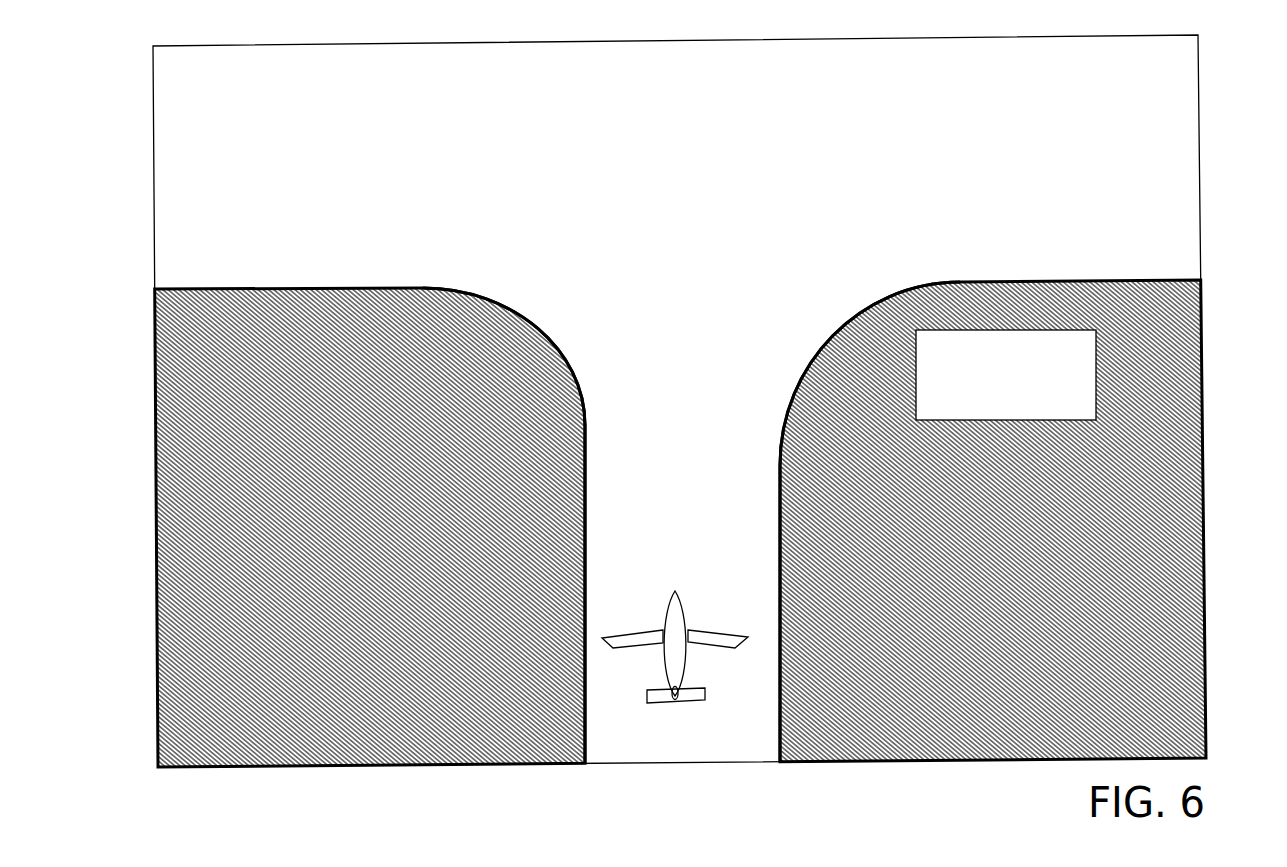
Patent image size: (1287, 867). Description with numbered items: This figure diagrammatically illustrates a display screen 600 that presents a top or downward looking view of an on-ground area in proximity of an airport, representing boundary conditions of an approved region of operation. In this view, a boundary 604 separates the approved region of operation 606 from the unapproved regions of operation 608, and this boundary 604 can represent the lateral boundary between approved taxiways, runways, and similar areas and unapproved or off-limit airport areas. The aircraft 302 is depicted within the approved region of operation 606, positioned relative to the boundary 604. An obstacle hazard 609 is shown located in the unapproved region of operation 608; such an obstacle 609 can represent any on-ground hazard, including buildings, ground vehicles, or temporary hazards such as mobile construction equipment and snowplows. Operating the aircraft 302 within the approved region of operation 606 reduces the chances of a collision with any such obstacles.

The display screen 600 is at (1198, 95).
The approved region of operation 606 is at (1078, 218).
The unapproved regions of operation 608 is at (233, 320).
The boundary 604 is at (512, 323).
The obstacle hazard 609 is at (1007, 328).
The aircraft 302 is at (675, 702).